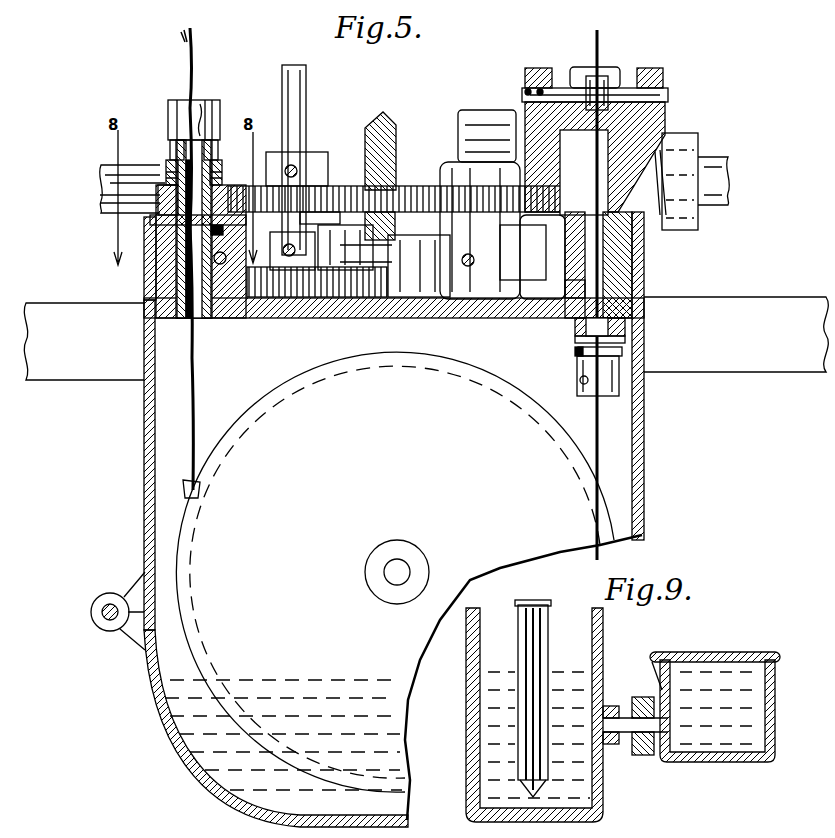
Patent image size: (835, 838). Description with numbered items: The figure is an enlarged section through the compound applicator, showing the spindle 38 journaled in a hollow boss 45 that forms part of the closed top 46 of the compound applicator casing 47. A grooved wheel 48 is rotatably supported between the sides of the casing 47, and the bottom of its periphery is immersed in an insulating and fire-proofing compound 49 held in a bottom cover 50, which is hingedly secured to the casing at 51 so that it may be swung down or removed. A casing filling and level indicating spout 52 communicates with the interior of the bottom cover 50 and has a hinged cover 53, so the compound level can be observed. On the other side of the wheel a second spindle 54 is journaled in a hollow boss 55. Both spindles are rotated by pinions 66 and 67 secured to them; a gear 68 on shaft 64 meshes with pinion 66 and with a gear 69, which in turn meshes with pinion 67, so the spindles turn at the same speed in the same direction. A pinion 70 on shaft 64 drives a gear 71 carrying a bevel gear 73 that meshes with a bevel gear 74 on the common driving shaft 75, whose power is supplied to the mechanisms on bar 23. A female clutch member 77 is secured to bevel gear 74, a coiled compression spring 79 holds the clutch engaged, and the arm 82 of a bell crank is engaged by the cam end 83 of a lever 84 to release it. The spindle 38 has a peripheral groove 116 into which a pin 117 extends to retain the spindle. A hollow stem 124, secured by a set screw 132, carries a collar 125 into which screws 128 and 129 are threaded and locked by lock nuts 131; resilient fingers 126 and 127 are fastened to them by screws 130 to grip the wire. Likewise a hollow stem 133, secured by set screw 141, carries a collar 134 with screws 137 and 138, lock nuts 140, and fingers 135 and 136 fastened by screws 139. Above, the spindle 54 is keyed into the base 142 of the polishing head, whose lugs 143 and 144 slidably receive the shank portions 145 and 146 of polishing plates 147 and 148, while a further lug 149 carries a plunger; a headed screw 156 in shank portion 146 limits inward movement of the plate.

In FIG. 5, the bar 23 is at (57, 365).
In FIG. 5, the spindle 38 is at (178, 240).
In FIG. 5, the hollow boss 45 is at (148, 284).
In FIG. 5, the closed top 46 is at (314, 298).
In FIG. 5, the compound applicator casing 47 is at (144, 432).
In FIG. 5, the grooved wheel 48 is at (296, 460).
In FIG. 9, the grooved wheel 48 is at (530, 656).
In FIG. 5, the insulating and fire-proofing compound 49 is at (165, 725).
In FIG. 9, the insulating and fire-proofing compound 49 is at (493, 710).
In FIG. 5, the bottom cover 50 is at (175, 766).
In FIG. 9, the bottom cover 50 is at (468, 770).
In FIG. 5, the hinge 51 is at (102, 614).
In FIG. 9, the casing filling and level indicating spout 52 is at (768, 730).
In FIG. 9, the hinged cover 53 is at (718, 652).
In FIG. 5, the spindle 54 is at (620, 270).
In FIG. 5, the hollow boss 55 is at (644, 241).
In FIG. 5, the shaft 64 is at (302, 100).
In FIG. 5, the pinion 66 is at (150, 200).
In FIG. 5, the pinion 67 is at (705, 195).
In FIG. 5, the gear 68 is at (294, 196).
In FIG. 5, the gear 69 is at (490, 193).
In FIG. 5, the pinion 70 is at (287, 283).
In FIG. 5, the gear 71 is at (382, 282).
In FIG. 5, the bevel gear 73 is at (340, 240).
In FIG. 5, the bevel gear 74 is at (378, 130).
In FIG. 5, the common driving shaft 75 is at (104, 170).
In FIG. 5, the female clutch member 77 is at (487, 125).
In FIG. 5, the coiled compression spring 79 is at (676, 163).
In FIG. 5, the arm of the bell crank 82 is at (520, 238).
In FIG. 5, the cam end 83 is at (438, 300).
In FIG. 5, the lever 84 is at (362, 258).
In FIG. 5, the peripheral groove 116 is at (177, 318).
In FIG. 5, the pin 117 is at (232, 292).
In FIG. 5, the hollow stem 124 is at (168, 228).
In FIG. 5, the collar 125 is at (165, 178).
In FIG. 5, the resilient finger 126 is at (182, 108).
In FIG. 5, the resilient finger 127 is at (212, 106).
In FIG. 5, the screw 128 is at (172, 147).
In FIG. 5, the screw 129 is at (216, 147).
In FIG. 5, the screw 130 is at (200, 103).
In FIG. 5, the lock nut 131 is at (166, 155).
In FIG. 5, the set screw 132 is at (212, 318).
In FIG. 5, the hollow stem 133 is at (610, 293).
In FIG. 5, the collar 134 is at (625, 322).
In FIG. 5, the resilient finger 135 is at (605, 390).
In FIG. 5, the resilient finger 136 is at (585, 394).
In FIG. 5, the screw 137 is at (625, 352).
In FIG. 5, the screw 138 is at (578, 352).
In FIG. 5, the screw 139 is at (580, 380).
In FIG. 5, the lock nut 140 is at (577, 342).
In FIG. 5, the set screw 141 is at (537, 315).
In FIG. 5, the base of polishing head 142 is at (648, 150).
In FIG. 5, the lug 143 is at (652, 68).
In FIG. 5, the lug 144 is at (540, 70).
In FIG. 5, the shank portion 145 is at (670, 93).
In FIG. 5, the shank portion 146 is at (525, 90).
In FIG. 5, the polishing plate 147 is at (600, 60).
In FIG. 5, the polishing plate 148 is at (590, 78).
In FIG. 5, the lug 149 is at (608, 70).
In FIG. 5, the headed screw 156 is at (525, 93).